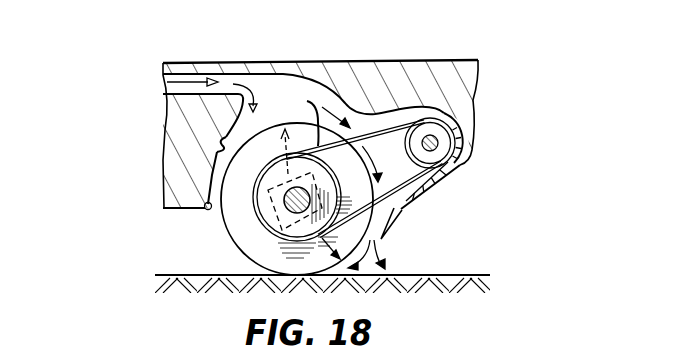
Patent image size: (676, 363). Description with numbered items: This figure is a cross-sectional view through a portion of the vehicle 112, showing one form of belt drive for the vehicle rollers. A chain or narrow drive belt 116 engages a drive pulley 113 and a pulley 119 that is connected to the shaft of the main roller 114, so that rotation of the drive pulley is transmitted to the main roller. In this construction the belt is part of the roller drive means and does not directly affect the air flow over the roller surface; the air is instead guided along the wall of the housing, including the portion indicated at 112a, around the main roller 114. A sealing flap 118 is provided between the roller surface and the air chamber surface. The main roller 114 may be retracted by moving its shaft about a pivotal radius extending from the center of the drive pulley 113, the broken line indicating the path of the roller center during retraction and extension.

The vehicle 112 is at (294, 128).
The housing projection 112a is at (218, 152).
The drive roller 113 is at (442, 146).
The main roller 114 is at (256, 257).
The drive belt 116 is at (295, 115).
The sealing flap 118 is at (206, 212).
The pulley 119 is at (302, 228).